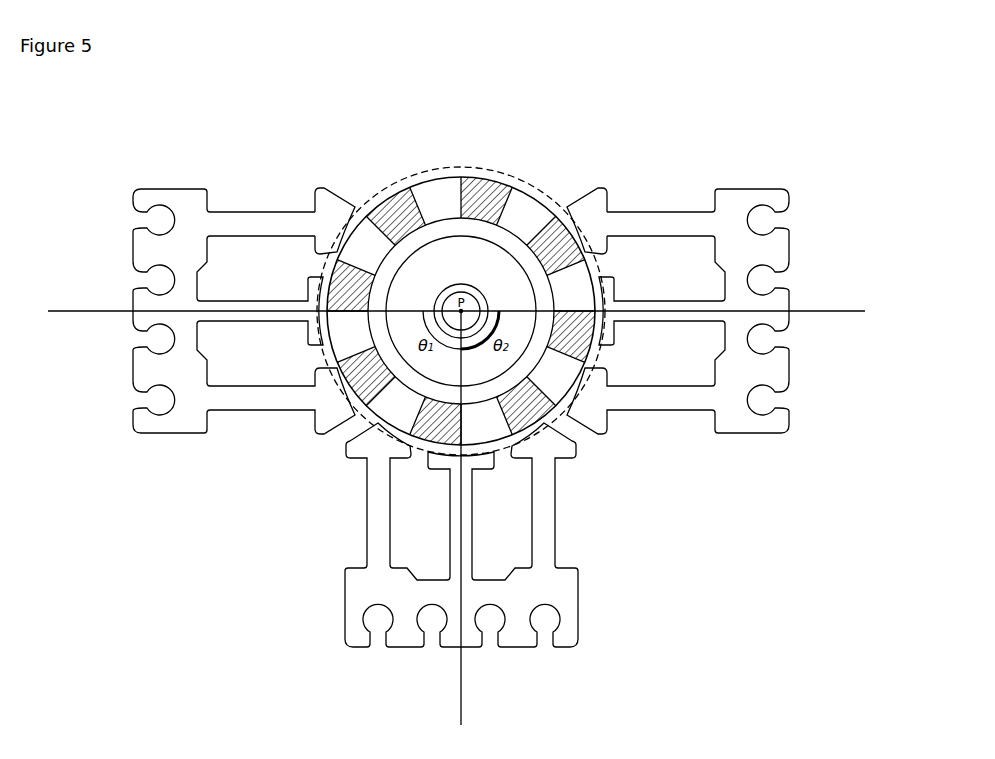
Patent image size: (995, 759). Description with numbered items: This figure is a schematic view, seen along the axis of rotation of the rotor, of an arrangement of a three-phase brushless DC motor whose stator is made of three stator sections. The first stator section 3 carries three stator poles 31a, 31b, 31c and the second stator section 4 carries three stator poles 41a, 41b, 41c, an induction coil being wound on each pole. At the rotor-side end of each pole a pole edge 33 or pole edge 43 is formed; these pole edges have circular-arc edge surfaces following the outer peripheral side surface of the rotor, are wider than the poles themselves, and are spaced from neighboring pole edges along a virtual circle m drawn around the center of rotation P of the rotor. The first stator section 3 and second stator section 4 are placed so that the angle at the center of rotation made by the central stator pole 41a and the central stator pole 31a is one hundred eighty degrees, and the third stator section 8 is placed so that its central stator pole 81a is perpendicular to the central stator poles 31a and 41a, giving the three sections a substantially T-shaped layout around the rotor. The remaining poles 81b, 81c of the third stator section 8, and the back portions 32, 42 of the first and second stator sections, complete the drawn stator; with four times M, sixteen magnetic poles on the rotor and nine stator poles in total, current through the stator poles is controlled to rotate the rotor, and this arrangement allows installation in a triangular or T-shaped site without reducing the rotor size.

The virtual circle m is at (390, 186).
The first stator section 3 is at (790, 252).
The central stator pole 31a is at (692, 320).
The stator pole 31b is at (645, 405).
The stator pole 31c is at (664, 226).
The back yoke portion of first stator yoke 32 is at (738, 200).
The pole edge 33 is at (576, 205).
The second stator section 4 is at (153, 250).
The central stator pole 41a is at (274, 300).
The stator pole 41b is at (228, 392).
The stator pole 41c is at (237, 218).
The back yoke portion of second stator yoke 42 is at (150, 192).
The pole edge 43 is at (318, 193).
The third stator section 8 is at (355, 582).
The central stator pole 81a is at (468, 535).
The left magnetic pole of third stator yoke 81b is at (370, 492).
The right magnetic pole of third stator yoke 81c is at (550, 520).